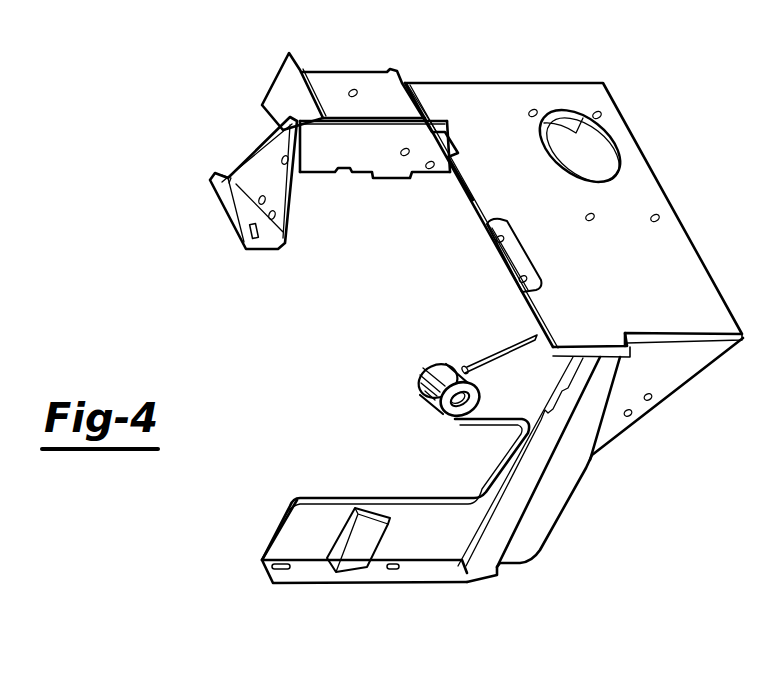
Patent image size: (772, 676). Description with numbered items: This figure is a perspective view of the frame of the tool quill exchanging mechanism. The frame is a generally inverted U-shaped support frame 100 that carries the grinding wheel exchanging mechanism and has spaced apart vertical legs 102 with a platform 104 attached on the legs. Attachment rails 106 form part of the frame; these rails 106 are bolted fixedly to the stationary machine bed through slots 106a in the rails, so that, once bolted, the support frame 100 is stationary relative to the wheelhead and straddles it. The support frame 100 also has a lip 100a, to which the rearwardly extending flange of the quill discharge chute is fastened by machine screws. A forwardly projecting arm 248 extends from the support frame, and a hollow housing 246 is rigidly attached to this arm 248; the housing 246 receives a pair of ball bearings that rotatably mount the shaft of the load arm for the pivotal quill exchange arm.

The support frame 100 is at (378, 282).
The lip 100a is at (510, 252).
The vertical legs 102 is at (329, 183).
The platform 104 is at (672, 175).
The attachment rails 106 is at (352, 72).
The slots 106a is at (227, 178).
The hollow housing 246 is at (437, 372).
The forwardly projecting arm 248 is at (493, 373).